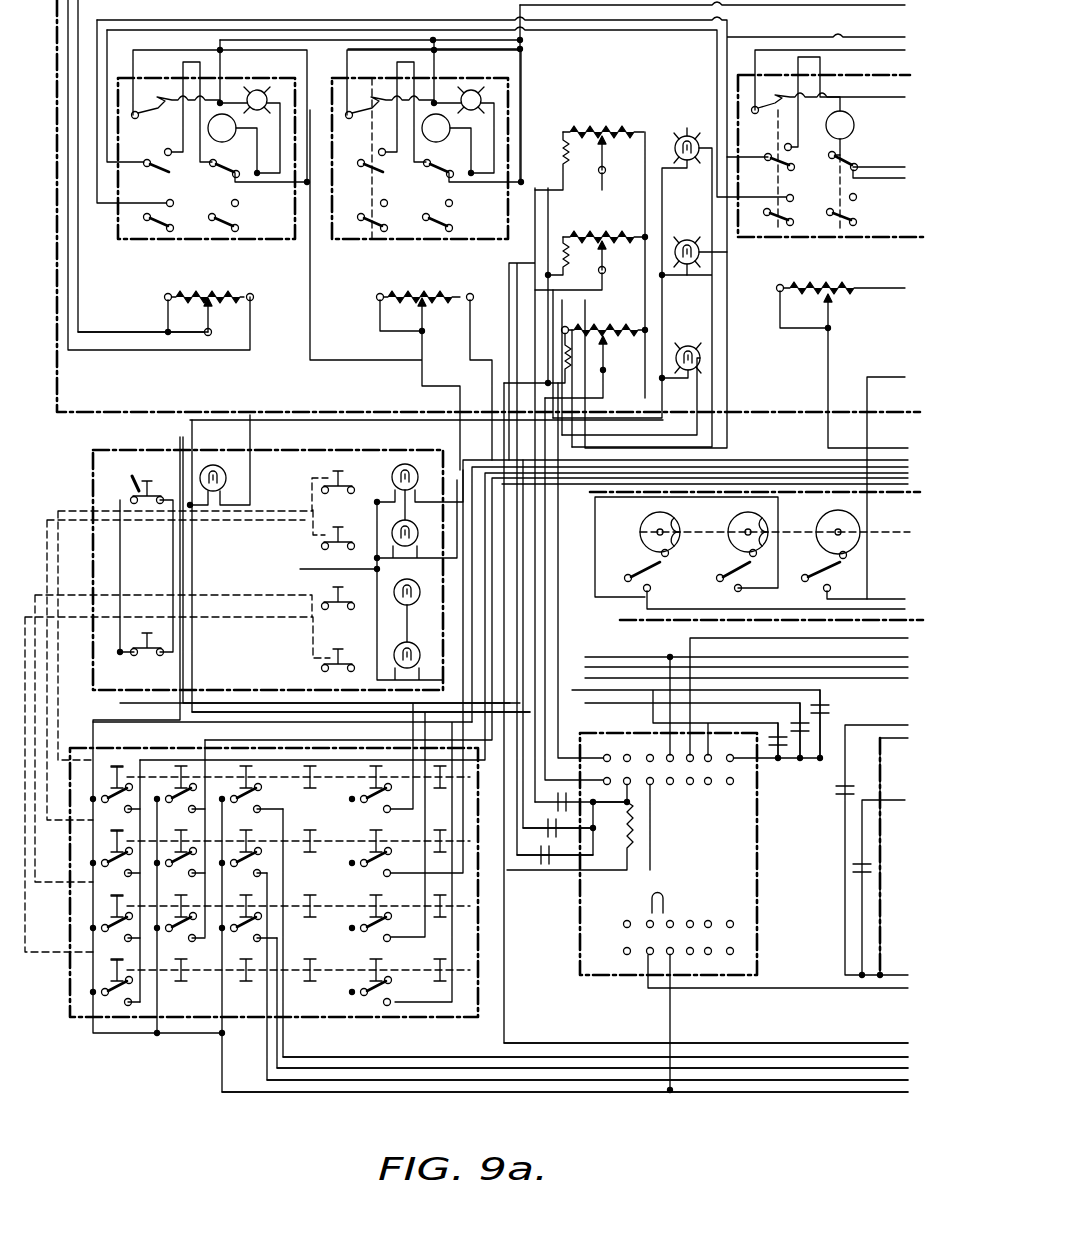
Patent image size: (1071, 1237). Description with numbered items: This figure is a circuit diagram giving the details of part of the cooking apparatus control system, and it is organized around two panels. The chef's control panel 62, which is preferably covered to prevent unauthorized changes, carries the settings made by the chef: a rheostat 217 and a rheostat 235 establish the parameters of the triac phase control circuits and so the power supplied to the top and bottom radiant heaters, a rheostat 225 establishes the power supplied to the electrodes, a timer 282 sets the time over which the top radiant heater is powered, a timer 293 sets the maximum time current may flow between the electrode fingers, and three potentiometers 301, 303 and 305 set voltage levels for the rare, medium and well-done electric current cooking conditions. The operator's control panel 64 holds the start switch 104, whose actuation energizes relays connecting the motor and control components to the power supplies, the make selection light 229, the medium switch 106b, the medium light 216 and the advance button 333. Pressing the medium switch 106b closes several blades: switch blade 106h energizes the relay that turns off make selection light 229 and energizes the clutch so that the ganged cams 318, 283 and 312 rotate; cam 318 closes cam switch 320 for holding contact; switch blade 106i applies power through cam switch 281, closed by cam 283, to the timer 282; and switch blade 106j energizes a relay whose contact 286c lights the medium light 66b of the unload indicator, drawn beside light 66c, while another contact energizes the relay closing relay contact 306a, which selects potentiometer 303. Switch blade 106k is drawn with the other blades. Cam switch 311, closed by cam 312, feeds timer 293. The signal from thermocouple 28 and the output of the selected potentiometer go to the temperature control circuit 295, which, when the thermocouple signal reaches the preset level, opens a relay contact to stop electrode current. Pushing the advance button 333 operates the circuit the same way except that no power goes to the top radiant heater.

The chef's control panel 62 is at (56, 378).
The operator's control panel 64 is at (90, 488).
The timer 282 is at (148, 248).
The timer 293 is at (372, 247).
The rheostat 217 is at (208, 297).
The rheostat 225 is at (420, 295).
The potentiometer 301 is at (603, 131).
The potentiometer 303 is at (600, 236).
The potentiometer 305 is at (600, 328).
The medium light 66b is at (684, 241).
The light 66c is at (686, 346).
The rheostat 235 is at (829, 290).
The start switch 104 is at (133, 482).
The make selection light 229 is at (232, 470).
The medium switch 106b is at (337, 510).
The medium light 216 is at (430, 518).
The advance button 333 is at (342, 652).
The cam 318 is at (655, 522).
The cam 283 is at (737, 524).
The cam 312 is at (842, 510).
The cam switch 320 is at (765, 585).
The cam switch 281 is at (749, 577).
The cam switch 311 is at (854, 580).
The relay contact 286c is at (807, 737).
The relay contact 306a is at (557, 850).
The thermocouple 28 is at (664, 889).
The temperature control circuit 295 is at (760, 890).
The switch blade 106h is at (118, 853).
The switch blade 106i is at (182, 860).
The switch blade 106j is at (245, 860).
The switch blade 106k is at (374, 860).